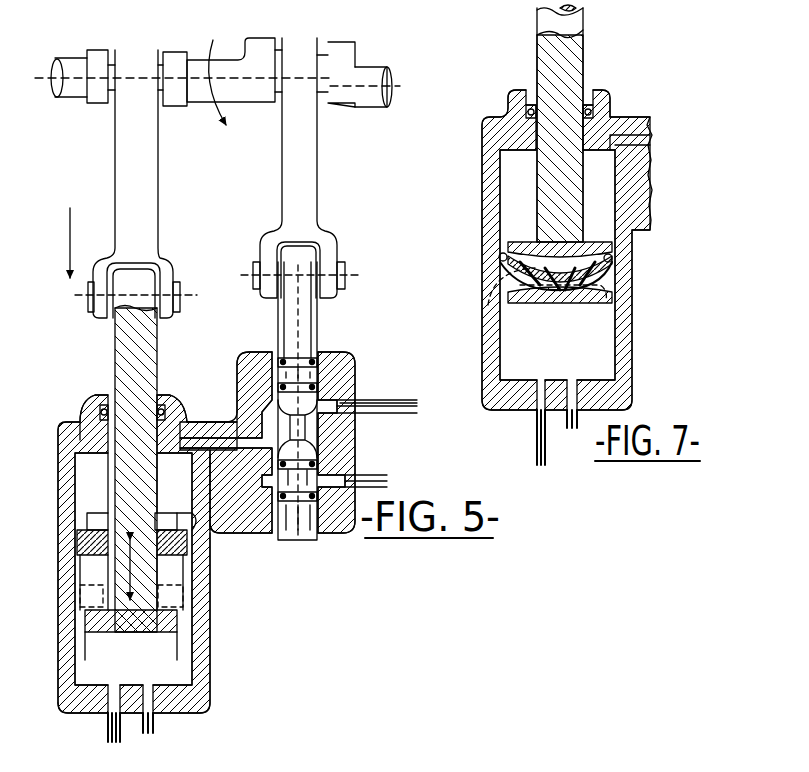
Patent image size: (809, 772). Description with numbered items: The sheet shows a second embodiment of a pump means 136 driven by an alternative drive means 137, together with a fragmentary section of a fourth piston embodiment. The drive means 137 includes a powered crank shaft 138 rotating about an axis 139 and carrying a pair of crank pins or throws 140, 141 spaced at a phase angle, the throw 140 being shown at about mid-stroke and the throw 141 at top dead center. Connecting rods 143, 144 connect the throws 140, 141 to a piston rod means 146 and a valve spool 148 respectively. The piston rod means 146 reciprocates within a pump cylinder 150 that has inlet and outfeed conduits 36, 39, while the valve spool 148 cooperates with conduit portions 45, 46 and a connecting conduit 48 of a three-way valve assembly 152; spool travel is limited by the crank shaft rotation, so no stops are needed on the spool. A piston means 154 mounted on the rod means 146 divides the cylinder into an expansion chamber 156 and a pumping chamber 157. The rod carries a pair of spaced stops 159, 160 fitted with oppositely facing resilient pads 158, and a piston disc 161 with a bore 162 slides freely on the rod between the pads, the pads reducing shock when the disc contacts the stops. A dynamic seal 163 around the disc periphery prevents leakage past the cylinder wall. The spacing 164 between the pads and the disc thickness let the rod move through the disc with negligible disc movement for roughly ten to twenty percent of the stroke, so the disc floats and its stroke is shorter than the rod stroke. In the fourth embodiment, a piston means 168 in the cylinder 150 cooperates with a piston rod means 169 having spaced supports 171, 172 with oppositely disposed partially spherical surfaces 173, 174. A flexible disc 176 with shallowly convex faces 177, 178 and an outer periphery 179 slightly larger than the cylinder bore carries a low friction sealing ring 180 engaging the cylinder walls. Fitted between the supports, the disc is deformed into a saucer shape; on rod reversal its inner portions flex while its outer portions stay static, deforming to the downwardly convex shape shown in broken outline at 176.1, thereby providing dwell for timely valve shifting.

In FIG. 5, the inlet conduit 36 is at (106, 728).
In FIG. 7, the inlet conduit 36 is at (535, 446).
In FIG. 5, the outfeed conduit 39 is at (155, 728).
In FIG. 7, the outfeed conduit 39 is at (575, 428).
In FIG. 5, the conduit portion 45 is at (360, 475).
In FIG. 5, the conduit portion 46 is at (362, 400).
In FIG. 5, the connecting conduit 48 is at (220, 436).
In FIG. 7, the connecting conduit 48 is at (612, 128).
In FIG. 5, the pump means 136 is at (63, 383).
In FIG. 5, the drive means 137 is at (245, 66).
In FIG. 5, the crank shaft 138 is at (76, 65).
In FIG. 5, the axis 139 is at (388, 85).
In FIG. 5, the throw 140 is at (172, 62).
In FIG. 5, the throw 141 is at (336, 50).
In FIG. 5, the connecting rod 143 is at (145, 150).
In FIG. 5, the connecting rod 144 is at (317, 158).
In FIG. 5, the piston rod means 146 is at (115, 350).
In FIG. 5, the valve spool 148 is at (310, 324).
In FIG. 5, the pump cylinder 150 is at (143, 554).
In FIG. 7, the pump cylinder 150 is at (640, 368).
In FIG. 5, the three-way valve assembly 152 is at (360, 416).
In FIG. 5, the piston means 154 is at (100, 480).
In FIG. 5, the expansion chamber 156 is at (92, 462).
In FIG. 5, the pumping chamber 157 is at (170, 672).
In FIG. 5, the resilient pads 158 is at (90, 535).
In FIG. 5, the stop 159 is at (185, 535).
In FIG. 5, the stop 160 is at (177, 620).
In FIG. 5, the piston disc 161 is at (145, 569).
In FIG. 5, the bore 162 is at (95, 570).
In FIG. 5, the dynamic seal 163 is at (190, 560).
In FIG. 5, the spacing 164 is at (125, 578).
In FIG. 7, the piston means 168 is at (610, 180).
In FIG. 7, the piston rod means 169 is at (583, 27).
In FIG. 7, the support 171 is at (562, 267).
In FIG. 7, the support 172 is at (590, 305).
In FIG. 7, the partially spherical surface 173 is at (600, 252).
In FIG. 7, the partially spherical surface 174 is at (590, 287).
In FIG. 7, the flexible disc 176 is at (505, 285).
In FIG. 7, the flexible disc in deformed position 176.1 is at (492, 315).
In FIG. 7, the convexly curved face 177 is at (510, 240).
In FIG. 7, the convexly curved face 178 is at (498, 275).
In FIG. 7, the outer periphery 179 is at (498, 257).
In FIG. 7, the sealing ring 180 is at (612, 259).